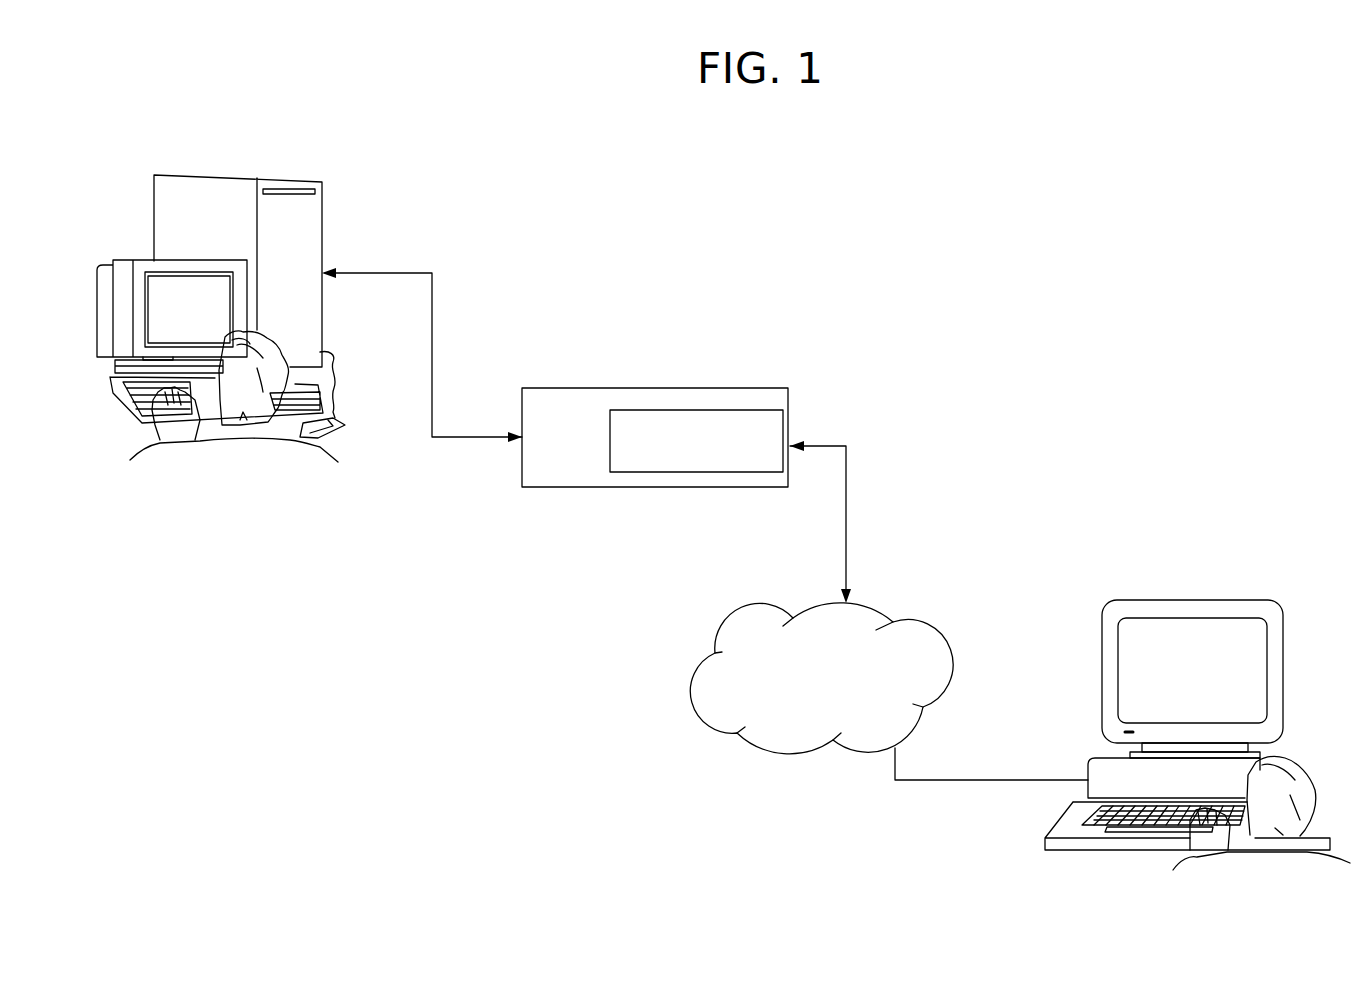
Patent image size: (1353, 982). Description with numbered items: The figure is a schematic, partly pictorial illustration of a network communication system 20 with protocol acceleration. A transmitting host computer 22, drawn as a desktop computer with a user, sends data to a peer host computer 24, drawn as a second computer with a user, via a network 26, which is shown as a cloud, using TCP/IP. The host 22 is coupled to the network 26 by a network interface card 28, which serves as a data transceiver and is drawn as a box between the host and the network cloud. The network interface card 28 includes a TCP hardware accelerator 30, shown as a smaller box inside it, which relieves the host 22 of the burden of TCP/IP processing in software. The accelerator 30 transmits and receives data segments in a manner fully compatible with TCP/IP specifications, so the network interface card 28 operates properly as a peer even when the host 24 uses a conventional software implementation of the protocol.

The network communication system 20 is at (1012, 205).
The transmitting host computer 22 is at (310, 225).
The peer host computer 24 is at (1088, 763).
The network 26 is at (923, 614).
The network interface card (NIC) 28 is at (582, 489).
The TCP hardware accelerator 30 is at (700, 474).